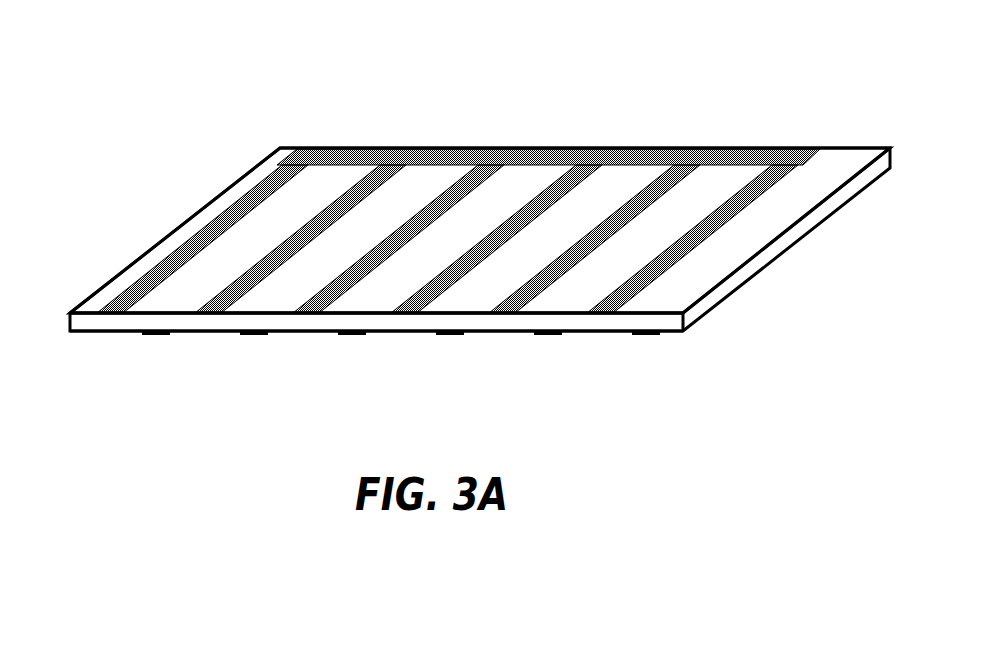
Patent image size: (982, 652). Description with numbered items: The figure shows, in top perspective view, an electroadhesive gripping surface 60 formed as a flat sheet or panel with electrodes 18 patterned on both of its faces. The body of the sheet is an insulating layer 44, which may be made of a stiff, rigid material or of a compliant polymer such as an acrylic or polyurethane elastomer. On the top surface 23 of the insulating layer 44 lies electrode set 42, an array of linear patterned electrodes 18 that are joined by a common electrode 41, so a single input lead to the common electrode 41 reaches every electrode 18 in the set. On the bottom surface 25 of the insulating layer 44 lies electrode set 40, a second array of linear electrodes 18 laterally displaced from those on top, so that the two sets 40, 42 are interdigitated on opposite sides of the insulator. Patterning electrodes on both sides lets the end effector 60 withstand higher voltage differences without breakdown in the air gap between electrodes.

The electroadhesive gripping surface 60 is at (195, 70).
The bottom electrode set 40 is at (85, 340).
The top electrode set 42 is at (85, 284).
The common electrode 41 is at (640, 158).
The electrodes 18 is at (207, 313).
The bottom surface 25 is at (334, 333).
The insulating layer 44 is at (233, 322).
The top surface 23 is at (278, 315).